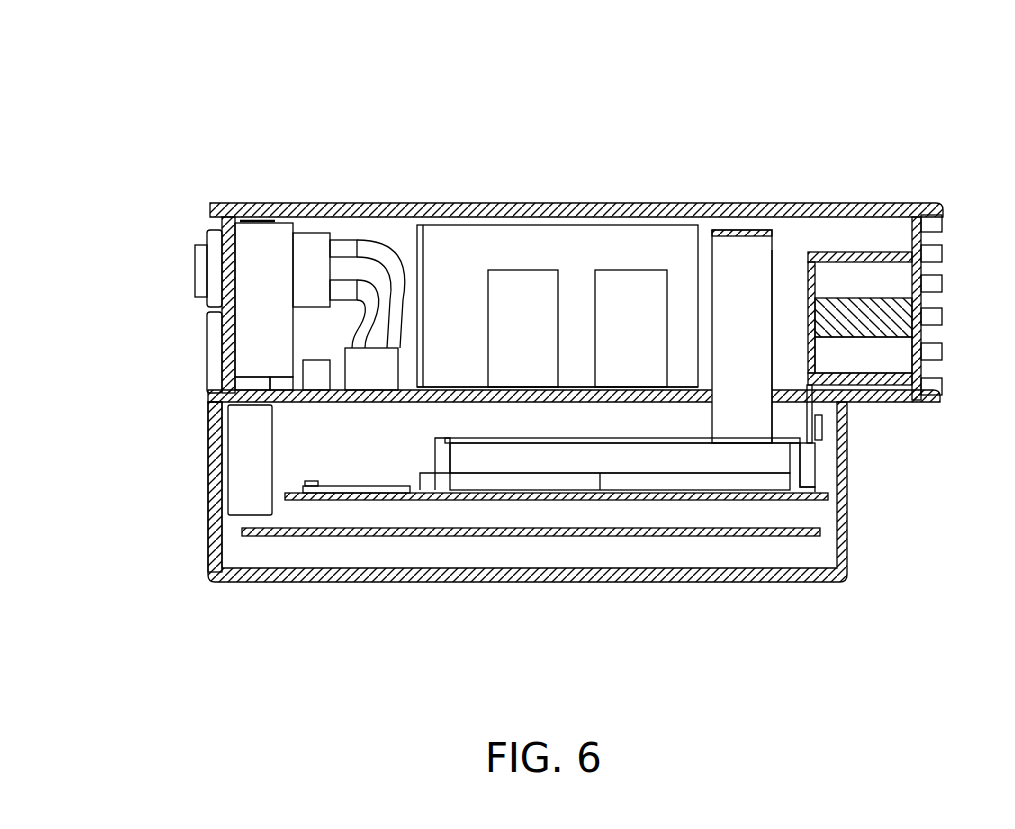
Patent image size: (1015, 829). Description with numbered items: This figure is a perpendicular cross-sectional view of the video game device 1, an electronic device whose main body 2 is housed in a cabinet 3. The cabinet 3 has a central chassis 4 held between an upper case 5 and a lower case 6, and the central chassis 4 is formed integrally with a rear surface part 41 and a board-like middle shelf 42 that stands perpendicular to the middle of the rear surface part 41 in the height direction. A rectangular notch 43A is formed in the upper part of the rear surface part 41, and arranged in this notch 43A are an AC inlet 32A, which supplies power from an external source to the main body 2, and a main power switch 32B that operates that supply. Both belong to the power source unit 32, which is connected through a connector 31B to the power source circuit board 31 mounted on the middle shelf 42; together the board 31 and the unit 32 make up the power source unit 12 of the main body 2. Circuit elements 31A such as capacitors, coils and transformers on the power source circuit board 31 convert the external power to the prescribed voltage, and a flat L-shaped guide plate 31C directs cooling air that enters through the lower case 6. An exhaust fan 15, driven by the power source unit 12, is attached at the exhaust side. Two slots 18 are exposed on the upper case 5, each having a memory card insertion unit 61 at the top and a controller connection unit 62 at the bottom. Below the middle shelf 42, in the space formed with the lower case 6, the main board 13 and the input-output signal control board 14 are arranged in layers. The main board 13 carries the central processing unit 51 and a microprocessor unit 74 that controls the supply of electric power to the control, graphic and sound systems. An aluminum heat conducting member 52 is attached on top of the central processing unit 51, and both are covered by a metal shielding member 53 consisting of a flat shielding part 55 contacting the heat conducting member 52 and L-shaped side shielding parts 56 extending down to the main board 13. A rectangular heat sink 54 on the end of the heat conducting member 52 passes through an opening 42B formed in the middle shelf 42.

The video game device 1 is at (185, 160).
The main body 2 is at (398, 248).
The cabinet 3 is at (718, 203).
The central chassis 4 is at (893, 402).
The upper case 5 is at (812, 203).
The lower case 6 is at (800, 582).
The power source unit 12 is at (465, 248).
The main board 13 is at (398, 500).
The input-output signal control board 14 is at (330, 536).
The exhaust fan 15 is at (243, 496).
The slot 18 is at (865, 252).
The power source circuit board 31 is at (445, 385).
The circuit element 31A is at (578, 268).
The connector 31B is at (362, 375).
The guide plate 31C is at (647, 240).
The power source unit 32 is at (253, 263).
The AC inlet 32A is at (216, 345).
The main power switch 32B is at (210, 267).
The rear surface part 41 is at (210, 447).
The middle shelf 42 is at (860, 402).
The opening 42B is at (770, 400).
The notch 43A is at (222, 225).
The central processing unit 51 is at (500, 478).
The heat conducting member 52 is at (588, 455).
The shielding member 53 is at (815, 462).
The rectangular heat sink 54 is at (750, 252).
The flat shielding part 55 is at (500, 438).
The side shielding part 56 is at (437, 468).
The memory card insertion unit 61 is at (905, 300).
The controller connection unit 62 is at (905, 363).
The microprocessor unit 74 is at (310, 492).